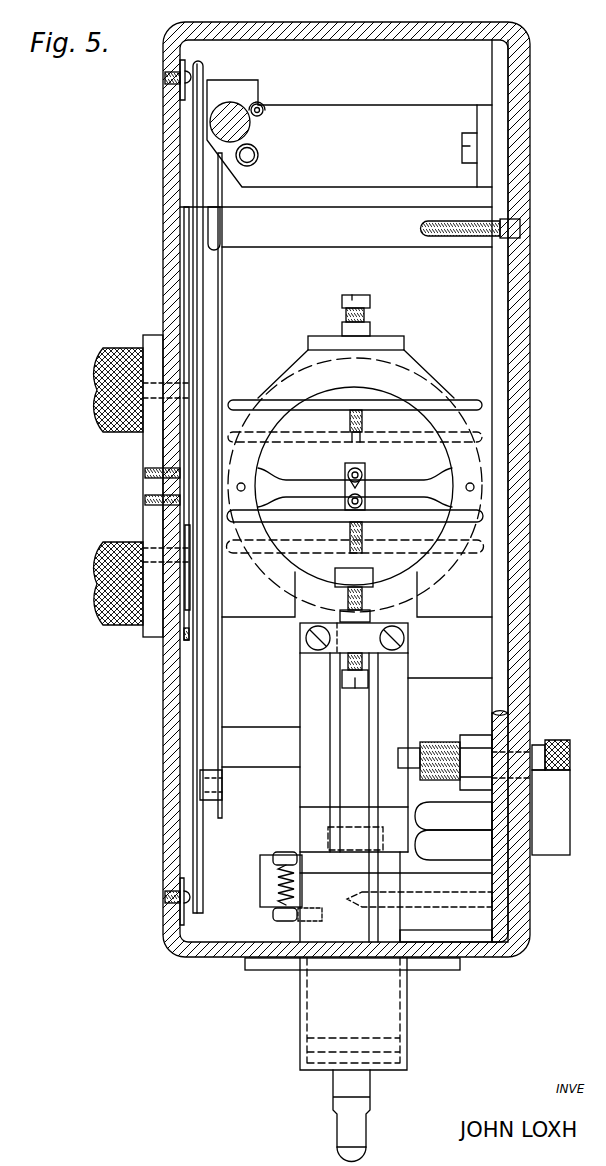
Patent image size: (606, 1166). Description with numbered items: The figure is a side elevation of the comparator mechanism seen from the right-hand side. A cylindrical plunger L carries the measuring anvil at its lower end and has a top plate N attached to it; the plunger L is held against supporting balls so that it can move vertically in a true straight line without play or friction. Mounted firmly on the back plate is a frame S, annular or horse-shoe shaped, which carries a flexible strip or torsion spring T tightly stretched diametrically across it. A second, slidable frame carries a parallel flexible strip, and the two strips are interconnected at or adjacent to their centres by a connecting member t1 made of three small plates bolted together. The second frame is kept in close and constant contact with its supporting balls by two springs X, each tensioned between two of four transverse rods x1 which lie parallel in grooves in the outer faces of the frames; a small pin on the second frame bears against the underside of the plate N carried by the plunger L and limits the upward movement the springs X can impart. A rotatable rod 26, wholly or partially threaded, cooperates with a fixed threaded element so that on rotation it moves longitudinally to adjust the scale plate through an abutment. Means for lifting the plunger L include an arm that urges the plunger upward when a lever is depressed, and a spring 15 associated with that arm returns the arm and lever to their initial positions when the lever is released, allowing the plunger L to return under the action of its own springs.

The rotatable rod 26 is at (349, 133).
The frame S is at (416, 360).
The spring X is at (362, 421).
The transverse rod x1 is at (292, 535).
The flexible strip or torsion spring T is at (384, 484).
The connecting member t1 is at (366, 500).
The top plate N is at (373, 571).
The plunger L is at (370, 598).
The spring 15 is at (272, 884).